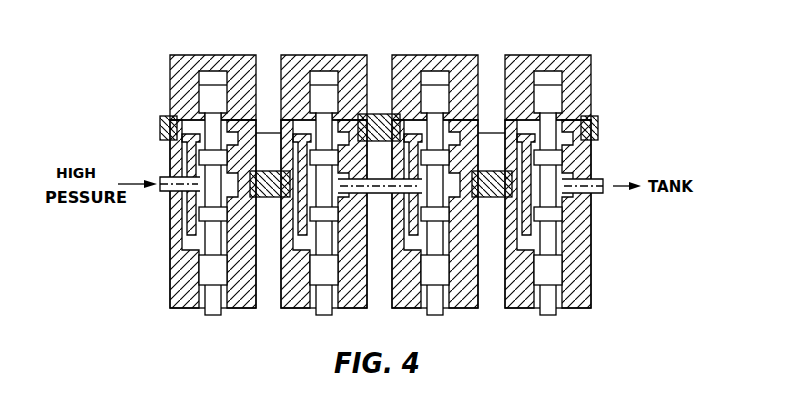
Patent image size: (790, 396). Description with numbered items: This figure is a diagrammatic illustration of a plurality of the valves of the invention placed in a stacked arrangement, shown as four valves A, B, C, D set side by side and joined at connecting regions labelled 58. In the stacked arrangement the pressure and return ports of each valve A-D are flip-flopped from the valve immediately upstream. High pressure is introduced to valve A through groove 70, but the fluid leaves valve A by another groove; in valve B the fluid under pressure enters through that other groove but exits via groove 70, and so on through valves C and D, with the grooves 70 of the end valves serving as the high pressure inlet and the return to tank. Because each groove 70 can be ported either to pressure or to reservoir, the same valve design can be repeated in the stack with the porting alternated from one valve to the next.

The valve A is at (213, 172).
The valve B is at (324, 172).
The valve C is at (435, 172).
The valve D is at (548, 172).
The connecting block 58 is at (268, 127).
The groove 70 is at (158, 177).